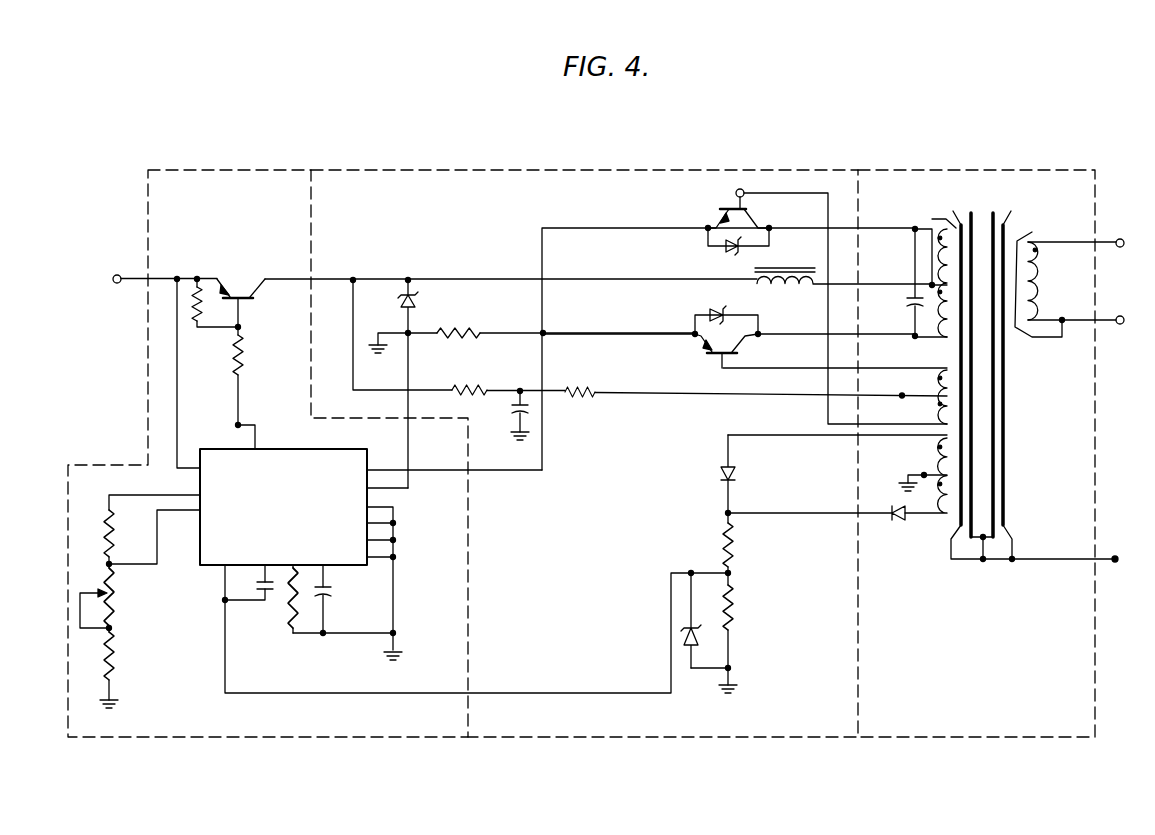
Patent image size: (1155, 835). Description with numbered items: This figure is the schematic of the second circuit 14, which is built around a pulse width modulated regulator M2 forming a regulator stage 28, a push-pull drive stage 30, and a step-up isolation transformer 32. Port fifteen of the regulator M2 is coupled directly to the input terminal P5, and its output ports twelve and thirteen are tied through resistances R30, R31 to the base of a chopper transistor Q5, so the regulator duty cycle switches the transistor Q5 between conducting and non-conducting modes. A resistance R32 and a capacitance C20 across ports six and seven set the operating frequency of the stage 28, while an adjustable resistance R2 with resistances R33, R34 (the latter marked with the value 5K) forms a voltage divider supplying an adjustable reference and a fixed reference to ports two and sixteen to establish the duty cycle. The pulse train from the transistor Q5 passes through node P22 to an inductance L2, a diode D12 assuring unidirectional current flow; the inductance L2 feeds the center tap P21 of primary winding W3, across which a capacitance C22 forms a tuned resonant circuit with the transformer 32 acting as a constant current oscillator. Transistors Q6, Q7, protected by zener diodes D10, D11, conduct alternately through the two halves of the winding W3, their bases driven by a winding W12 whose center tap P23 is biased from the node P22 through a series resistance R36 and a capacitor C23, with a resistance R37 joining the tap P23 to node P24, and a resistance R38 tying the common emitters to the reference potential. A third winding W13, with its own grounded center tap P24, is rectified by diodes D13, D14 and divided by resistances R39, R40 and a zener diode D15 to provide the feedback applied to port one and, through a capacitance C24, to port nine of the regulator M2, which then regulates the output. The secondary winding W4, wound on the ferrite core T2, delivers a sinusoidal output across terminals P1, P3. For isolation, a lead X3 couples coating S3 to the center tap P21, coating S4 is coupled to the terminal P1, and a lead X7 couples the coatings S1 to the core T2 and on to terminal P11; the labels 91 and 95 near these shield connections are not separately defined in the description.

The circuit 14 is at (596, 168).
The regulator stage 28 is at (236, 221).
The push-pull drive stage 30 is at (586, 555).
The step-up isolation transformer 32 is at (984, 720).
The terminal P5 is at (114, 275).
The transistor Q5 is at (239, 289).
The resistance R30 is at (198, 332).
The resistance R31 is at (245, 352).
The node P22 is at (353, 279).
The diode D12 is at (420, 300).
The resistance R38 is at (478, 340).
The series resistance R36 is at (458, 379).
The node P24 is at (519, 390).
The resistance R37 is at (575, 380).
The capacitor C23 is at (512, 406).
The pulse width modulated regulator M2 is at (301, 449).
The 5K ohm resistor value 5K is at (85, 534).
The resistance R34 is at (126, 538).
The adjustable resistance R2 is at (114, 599).
The resistance R33 is at (124, 668).
The capacitance C24 is at (257, 598).
The resistance R32 is at (284, 602).
The capacitance C20 is at (341, 585).
The transistor Q6 is at (754, 213).
The zener diode D10 is at (728, 258).
The inductance L2 is at (771, 263).
The zener diode D11 is at (713, 308).
The transistor Q7 is at (737, 351).
The core T2 is at (985, 214).
The lead X3 is at (946, 221).
The center tap P21 is at (930, 285).
The capacitance C22 is at (906, 312).
The primary winding W3 is at (927, 346).
The winding W12 is at (938, 382).
The center tap P23 is at (902, 397).
The third winding W13 is at (940, 438).
The diode D13 is at (899, 519).
The coating S3 is at (949, 535).
The coating S1 is at (948, 540).
The shield connection 95 is at (1013, 549).
The lead X7 is at (1035, 559).
The terminal P11 is at (1120, 562).
The secondary winding W4 is at (1037, 283).
The coating S4 is at (1032, 232).
The shield lead 91 is at (1040, 338).
The output terminal P3 is at (1121, 239).
The output terminal P1 is at (1120, 325).
The diode D14 is at (734, 474).
The resistance R39 is at (734, 545).
The resistance R40 is at (734, 608).
The zener diode D15 is at (682, 637).